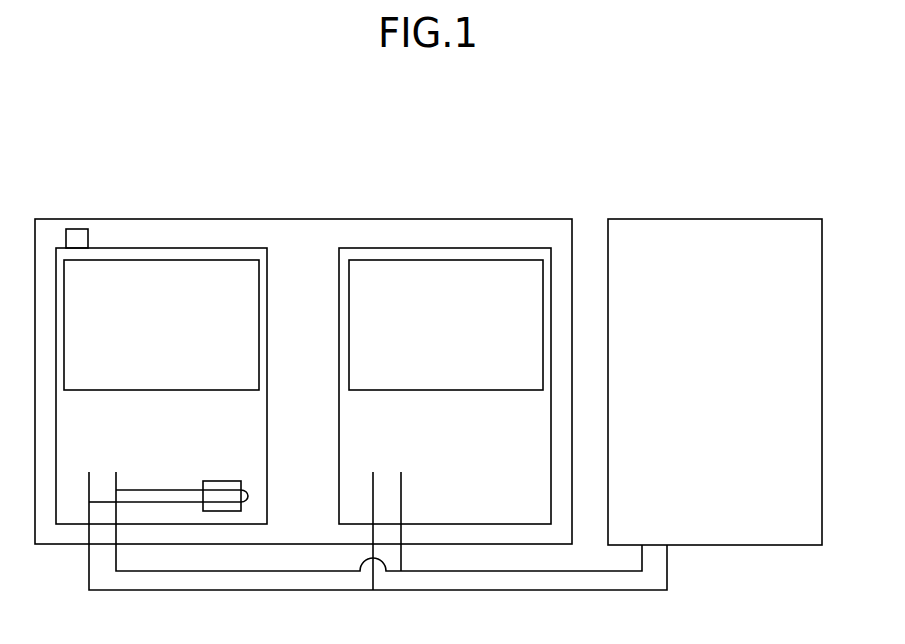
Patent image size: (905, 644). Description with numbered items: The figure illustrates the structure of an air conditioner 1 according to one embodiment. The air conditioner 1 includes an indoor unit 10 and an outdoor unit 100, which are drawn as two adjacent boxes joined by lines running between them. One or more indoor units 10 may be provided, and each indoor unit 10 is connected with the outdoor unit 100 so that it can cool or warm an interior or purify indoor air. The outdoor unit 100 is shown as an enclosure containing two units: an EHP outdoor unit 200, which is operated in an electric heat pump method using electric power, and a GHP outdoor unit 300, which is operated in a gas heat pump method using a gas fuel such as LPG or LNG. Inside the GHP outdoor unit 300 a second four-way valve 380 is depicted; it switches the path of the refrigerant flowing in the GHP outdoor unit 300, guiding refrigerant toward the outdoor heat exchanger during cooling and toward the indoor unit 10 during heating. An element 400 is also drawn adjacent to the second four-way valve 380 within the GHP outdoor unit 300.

The air conditioner 1 is at (579, 169).
The indoor unit 10 is at (714, 219).
The outdoor unit 100 is at (303, 219).
The EHP outdoor unit 200 is at (446, 248).
The GHP outdoor unit 300 is at (163, 248).
The second four-way valve 380 is at (222, 481).
The cable 400 is at (165, 489).